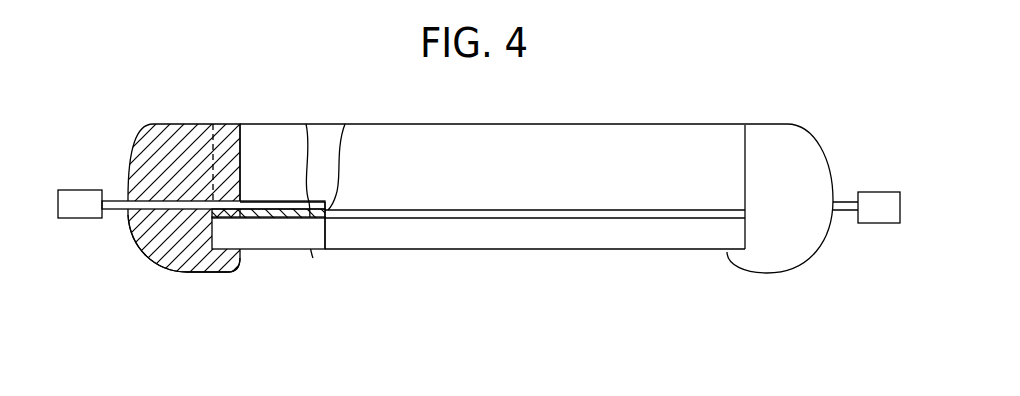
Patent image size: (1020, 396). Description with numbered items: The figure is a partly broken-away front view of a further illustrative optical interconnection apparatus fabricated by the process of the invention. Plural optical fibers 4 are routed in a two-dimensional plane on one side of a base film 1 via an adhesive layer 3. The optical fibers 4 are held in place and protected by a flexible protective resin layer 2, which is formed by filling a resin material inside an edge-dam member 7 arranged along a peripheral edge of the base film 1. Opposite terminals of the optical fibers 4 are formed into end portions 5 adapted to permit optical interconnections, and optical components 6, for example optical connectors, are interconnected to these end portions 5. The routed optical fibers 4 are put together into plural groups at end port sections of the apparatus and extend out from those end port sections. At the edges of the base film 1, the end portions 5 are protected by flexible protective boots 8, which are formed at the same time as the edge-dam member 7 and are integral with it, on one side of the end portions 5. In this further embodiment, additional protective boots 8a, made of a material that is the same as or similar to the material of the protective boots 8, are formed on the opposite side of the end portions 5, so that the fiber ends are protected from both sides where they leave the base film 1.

The base film 1 is at (270, 240).
The flexible protective resin layer 2 is at (270, 131).
The adhesive layer 3 is at (307, 230).
The optical fibers 4 is at (305, 123).
The end portions 5 is at (116, 212).
The optical components 6 is at (80, 197).
The edge-dam member 7 is at (224, 127).
The protective boots 8 is at (183, 132).
The additional protective boots 8a is at (168, 257).